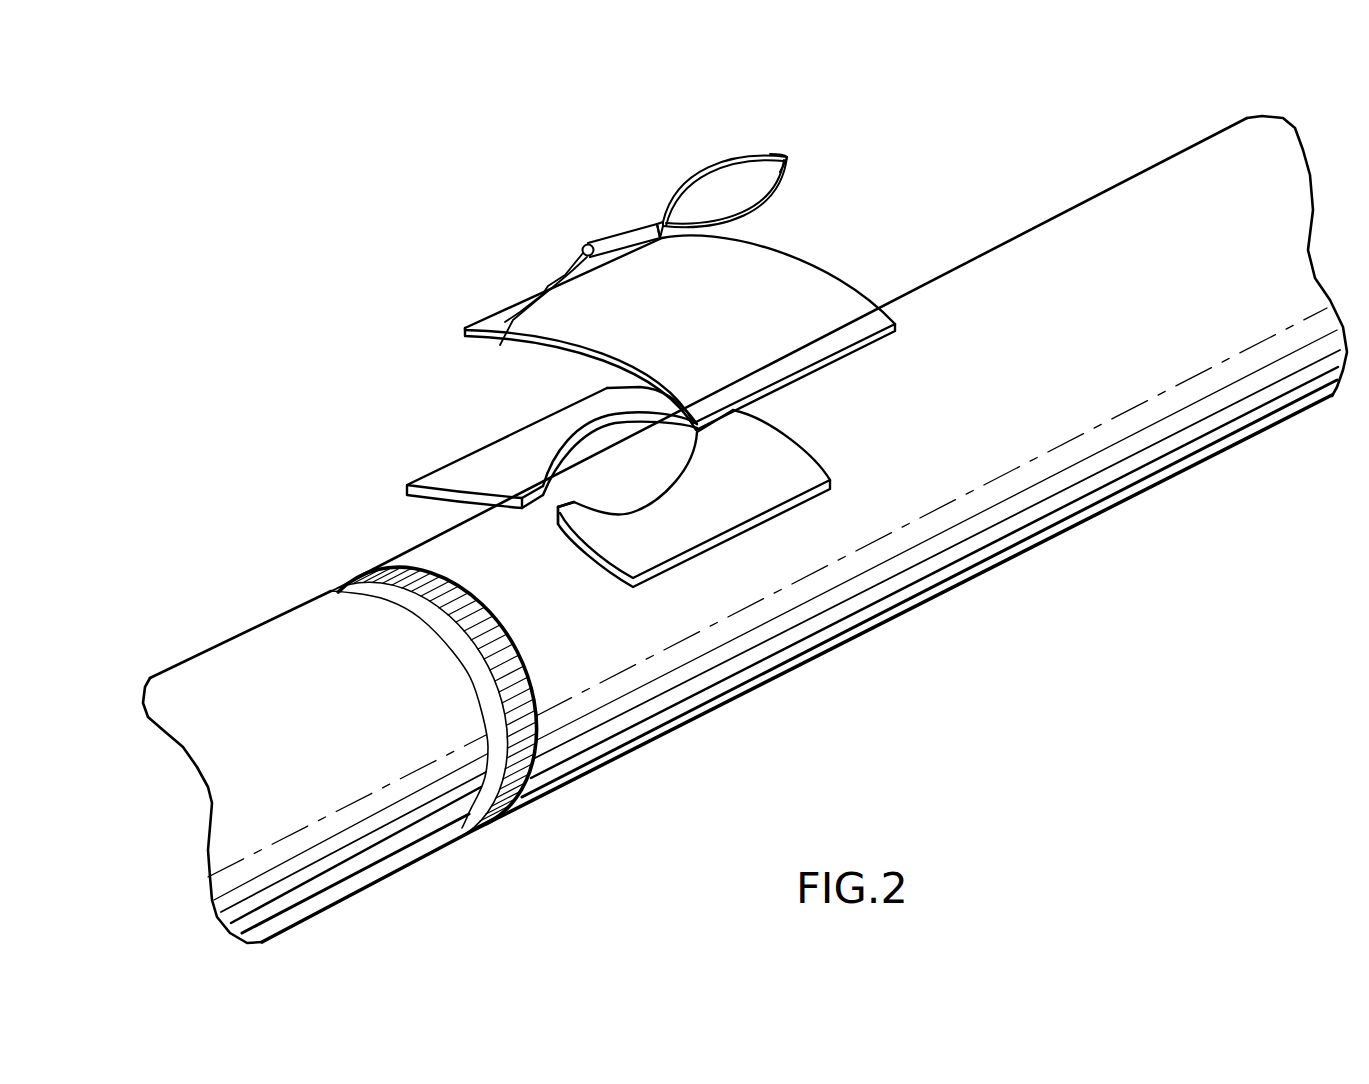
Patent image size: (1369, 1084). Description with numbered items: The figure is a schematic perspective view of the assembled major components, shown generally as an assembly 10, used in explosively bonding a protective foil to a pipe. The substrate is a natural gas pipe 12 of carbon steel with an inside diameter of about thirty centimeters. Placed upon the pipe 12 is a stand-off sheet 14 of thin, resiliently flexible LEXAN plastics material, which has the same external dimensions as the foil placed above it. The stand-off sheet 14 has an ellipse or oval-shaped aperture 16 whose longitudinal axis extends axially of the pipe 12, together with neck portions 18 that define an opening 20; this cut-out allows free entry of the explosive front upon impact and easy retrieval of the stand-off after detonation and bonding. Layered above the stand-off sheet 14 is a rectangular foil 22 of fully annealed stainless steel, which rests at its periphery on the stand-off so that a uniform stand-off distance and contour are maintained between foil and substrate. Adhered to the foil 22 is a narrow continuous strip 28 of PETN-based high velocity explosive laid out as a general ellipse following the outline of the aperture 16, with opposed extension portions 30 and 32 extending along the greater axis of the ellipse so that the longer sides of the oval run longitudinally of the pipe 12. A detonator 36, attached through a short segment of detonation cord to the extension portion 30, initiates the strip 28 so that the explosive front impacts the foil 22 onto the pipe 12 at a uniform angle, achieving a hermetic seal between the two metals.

The assembly 10 is at (920, 655).
The pipe substrate 12 is at (1023, 531).
The stand-off sheet 14 is at (793, 457).
The aperture 16 is at (573, 477).
The neck portions 18 is at (528, 486).
The opening 20 is at (545, 512).
The foil 22 is at (827, 277).
The explosive strip 28 is at (717, 160).
The extension portion 30 is at (662, 214).
The extension portion 32 is at (787, 157).
The detonator 36 is at (603, 237).